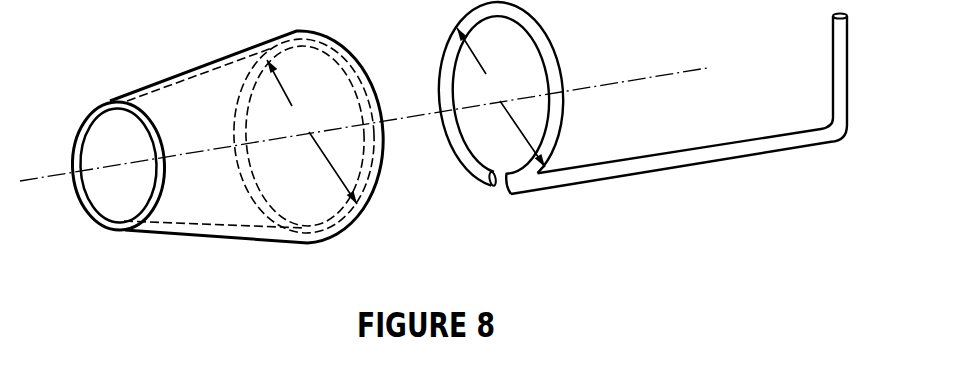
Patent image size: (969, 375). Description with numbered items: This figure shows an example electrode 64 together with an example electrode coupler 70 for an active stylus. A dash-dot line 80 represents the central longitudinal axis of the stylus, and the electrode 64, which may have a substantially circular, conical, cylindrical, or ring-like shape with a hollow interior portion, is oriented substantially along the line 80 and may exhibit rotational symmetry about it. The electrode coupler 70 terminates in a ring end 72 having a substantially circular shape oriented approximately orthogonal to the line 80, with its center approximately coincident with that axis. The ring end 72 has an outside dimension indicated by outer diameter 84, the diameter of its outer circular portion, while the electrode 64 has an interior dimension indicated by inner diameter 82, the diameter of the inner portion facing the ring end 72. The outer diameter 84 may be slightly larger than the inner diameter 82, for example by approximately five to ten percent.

The electrode 64 is at (188, 58).
The electrode coupler 70 is at (657, 187).
The ring end 72 is at (462, 151).
The line 80 is at (661, 73).
The inner diameter 82 is at (312, 132).
The outer diameter 84 is at (501, 97).